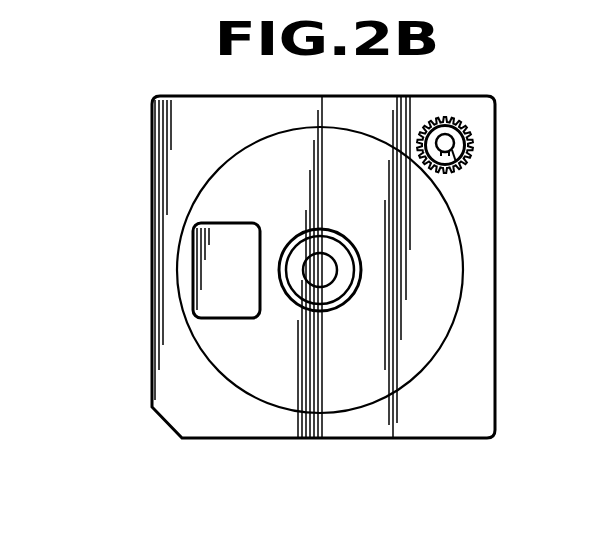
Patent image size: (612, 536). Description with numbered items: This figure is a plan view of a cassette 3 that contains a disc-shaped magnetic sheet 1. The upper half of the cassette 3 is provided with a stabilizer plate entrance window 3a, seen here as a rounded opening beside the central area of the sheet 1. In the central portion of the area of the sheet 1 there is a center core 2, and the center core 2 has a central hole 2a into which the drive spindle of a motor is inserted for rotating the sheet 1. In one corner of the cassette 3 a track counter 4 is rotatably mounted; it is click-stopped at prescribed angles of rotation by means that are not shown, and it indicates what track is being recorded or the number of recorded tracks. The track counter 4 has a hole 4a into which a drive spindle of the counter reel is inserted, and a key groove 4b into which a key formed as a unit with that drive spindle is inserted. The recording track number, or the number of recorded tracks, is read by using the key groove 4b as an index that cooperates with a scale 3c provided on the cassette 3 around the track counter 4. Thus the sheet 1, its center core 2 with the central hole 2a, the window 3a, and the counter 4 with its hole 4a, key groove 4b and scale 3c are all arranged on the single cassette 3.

The magnetic sheet 1 is at (238, 393).
The center core 2 is at (340, 262).
The central hole 2a is at (322, 262).
The cassette 3 is at (438, 428).
The stabilizer plate entrance window 3a is at (197, 300).
The scale 3c is at (470, 126).
The track counter 4 is at (466, 160).
The hole 4a is at (454, 146).
The key groove 4b is at (455, 172).